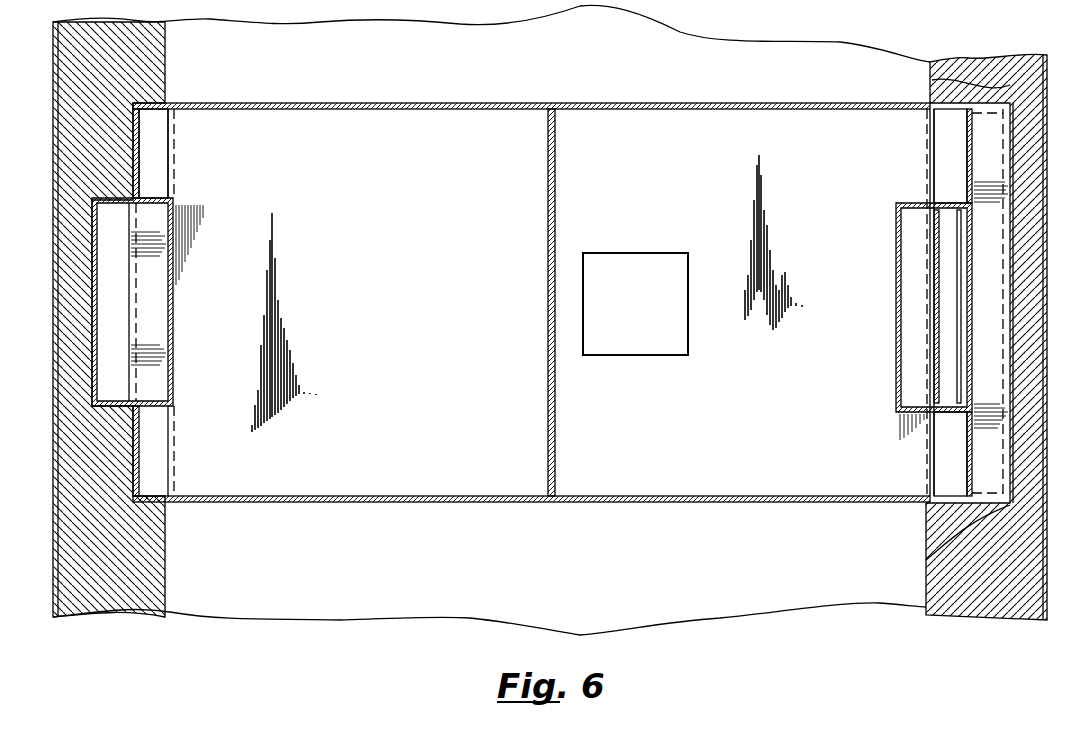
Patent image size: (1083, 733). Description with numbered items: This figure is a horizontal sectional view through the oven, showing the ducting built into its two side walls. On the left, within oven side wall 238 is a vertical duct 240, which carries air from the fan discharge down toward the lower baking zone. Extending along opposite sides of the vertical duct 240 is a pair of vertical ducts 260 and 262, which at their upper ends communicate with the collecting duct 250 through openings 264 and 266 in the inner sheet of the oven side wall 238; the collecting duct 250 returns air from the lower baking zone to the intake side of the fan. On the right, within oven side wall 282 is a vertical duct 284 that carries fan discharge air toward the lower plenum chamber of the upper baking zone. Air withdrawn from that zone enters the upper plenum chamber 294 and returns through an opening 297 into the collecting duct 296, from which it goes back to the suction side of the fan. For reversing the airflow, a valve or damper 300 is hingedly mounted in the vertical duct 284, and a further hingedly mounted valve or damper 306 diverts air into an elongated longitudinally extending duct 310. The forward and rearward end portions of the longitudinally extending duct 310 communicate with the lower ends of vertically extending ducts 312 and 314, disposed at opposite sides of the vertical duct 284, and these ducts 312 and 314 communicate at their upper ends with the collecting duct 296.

The oven side wall 238 is at (55, 350).
The vertical duct 240 is at (110, 290).
The collecting duct 250 is at (440, 322).
The vertical duct 260 is at (163, 157).
The vertical duct 262 is at (153, 461).
The opening 264 is at (173, 170).
The opening 266 is at (170, 434).
The oven side wall 282 is at (1047, 92).
The vertical duct 284 is at (948, 273).
The upper plenum chamber 294 is at (564, 67).
The collecting duct 296 is at (754, 402).
The opening 297 is at (657, 252).
The valve or damper 300 is at (936, 361).
The valve or damper 306 is at (957, 321).
The longitudinally extending duct 310 is at (983, 390).
The vertically extending duct 312 is at (938, 141).
The vertically extending duct 314 is at (943, 450).